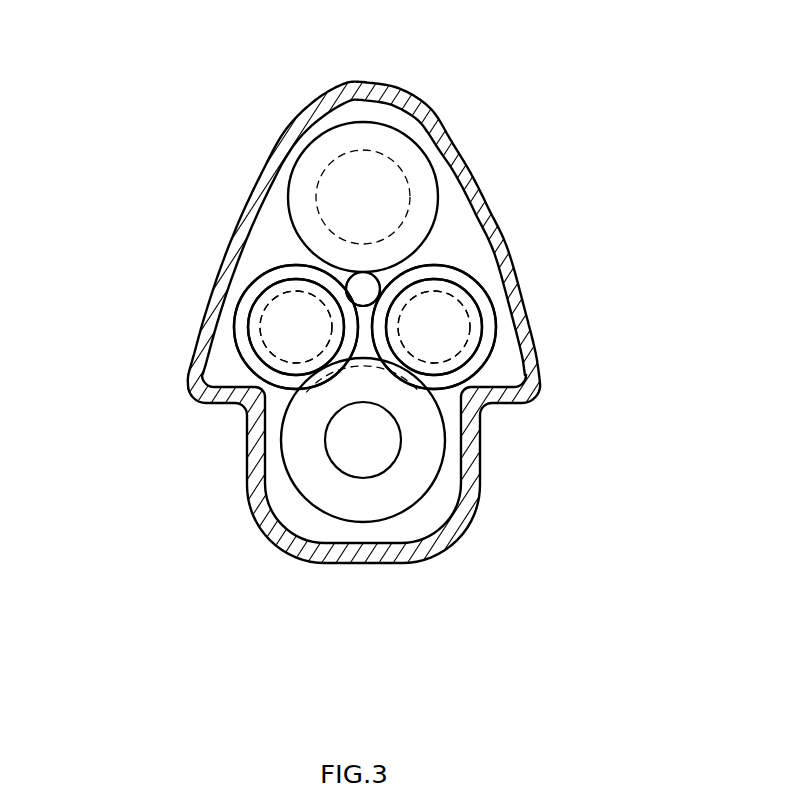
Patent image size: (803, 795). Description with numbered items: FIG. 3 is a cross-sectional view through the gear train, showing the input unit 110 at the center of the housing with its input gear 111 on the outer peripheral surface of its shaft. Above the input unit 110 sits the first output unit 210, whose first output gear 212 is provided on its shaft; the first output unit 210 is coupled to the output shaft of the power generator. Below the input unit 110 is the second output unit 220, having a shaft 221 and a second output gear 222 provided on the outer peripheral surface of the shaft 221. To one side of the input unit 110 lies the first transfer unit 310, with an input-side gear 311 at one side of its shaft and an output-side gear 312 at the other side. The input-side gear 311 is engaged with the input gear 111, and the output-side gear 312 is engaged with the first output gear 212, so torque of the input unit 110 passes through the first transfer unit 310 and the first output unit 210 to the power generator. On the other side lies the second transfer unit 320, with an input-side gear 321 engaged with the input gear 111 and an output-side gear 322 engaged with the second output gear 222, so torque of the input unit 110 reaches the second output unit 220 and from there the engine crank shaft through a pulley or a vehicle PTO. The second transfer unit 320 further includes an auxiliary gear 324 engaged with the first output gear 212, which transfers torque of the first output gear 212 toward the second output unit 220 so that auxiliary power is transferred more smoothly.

The input unit 110 is at (368, 288).
The input gear 111 is at (492, 267).
The first output unit 210 is at (398, 232).
The first output gear 212 is at (463, 197).
The second output unit 220 is at (430, 442).
The shaft 221 is at (360, 463).
The second output gear 222 is at (467, 411).
The first transfer unit 310 is at (381, 92).
The input-side gear 311 is at (364, 287).
The output-side gear 312 is at (385, 175).
The second transfer unit 320 is at (372, 328).
The input-side gear 321 is at (240, 349).
The output-side gear 322 is at (252, 323).
The auxiliary gear 324 is at (264, 306).